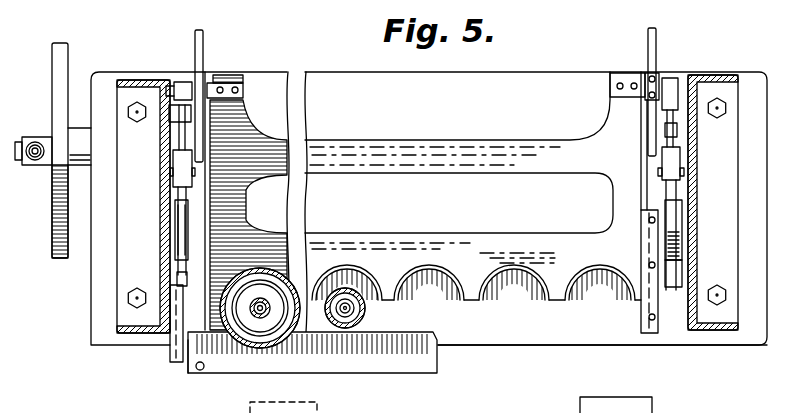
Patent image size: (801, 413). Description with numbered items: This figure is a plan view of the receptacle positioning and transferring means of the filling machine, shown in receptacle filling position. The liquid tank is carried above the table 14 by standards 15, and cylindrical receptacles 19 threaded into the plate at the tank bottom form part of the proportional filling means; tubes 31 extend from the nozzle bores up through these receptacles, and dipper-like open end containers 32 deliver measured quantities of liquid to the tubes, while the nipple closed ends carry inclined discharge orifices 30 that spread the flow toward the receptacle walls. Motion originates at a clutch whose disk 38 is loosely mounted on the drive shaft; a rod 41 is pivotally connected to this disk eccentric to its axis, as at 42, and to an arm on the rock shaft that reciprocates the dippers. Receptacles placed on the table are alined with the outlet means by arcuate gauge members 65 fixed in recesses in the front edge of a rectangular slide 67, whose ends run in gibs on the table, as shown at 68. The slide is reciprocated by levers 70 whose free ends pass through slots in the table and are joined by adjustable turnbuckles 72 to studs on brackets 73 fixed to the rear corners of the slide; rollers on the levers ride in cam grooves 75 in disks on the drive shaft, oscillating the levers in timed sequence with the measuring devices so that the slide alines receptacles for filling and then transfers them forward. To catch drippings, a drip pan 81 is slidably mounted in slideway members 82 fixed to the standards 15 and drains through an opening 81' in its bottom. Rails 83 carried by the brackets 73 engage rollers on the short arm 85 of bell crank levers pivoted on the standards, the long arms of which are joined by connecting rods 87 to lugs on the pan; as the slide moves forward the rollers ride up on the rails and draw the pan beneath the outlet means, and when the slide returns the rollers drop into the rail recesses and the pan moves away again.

The table 14 is at (610, 337).
The standards 15 is at (152, 82).
The cylindrical receptacles 19 is at (258, 300).
The discharge orifices 30 is at (347, 310).
The tubes 31 is at (363, 308).
The cylindrical open end containers 32 is at (270, 290).
The disk 38 is at (53, 64).
The rod 41 is at (35, 166).
The pivotal connection 42 is at (22, 138).
The gauge members 65 is at (547, 290).
The slide 67 is at (482, 243).
The gibs 68 is at (660, 333).
The levers 70 is at (182, 218).
The turnbuckles 72 is at (175, 173).
The brackets 73 is at (212, 80).
The cam grooves 75 is at (188, 282).
The drip pan 81 is at (326, 364).
The opening 81' is at (208, 360).
The members 82 is at (183, 360).
The rails 83 is at (205, 37).
The short arm 85 is at (173, 130).
The connecting rods 87 is at (200, 199).